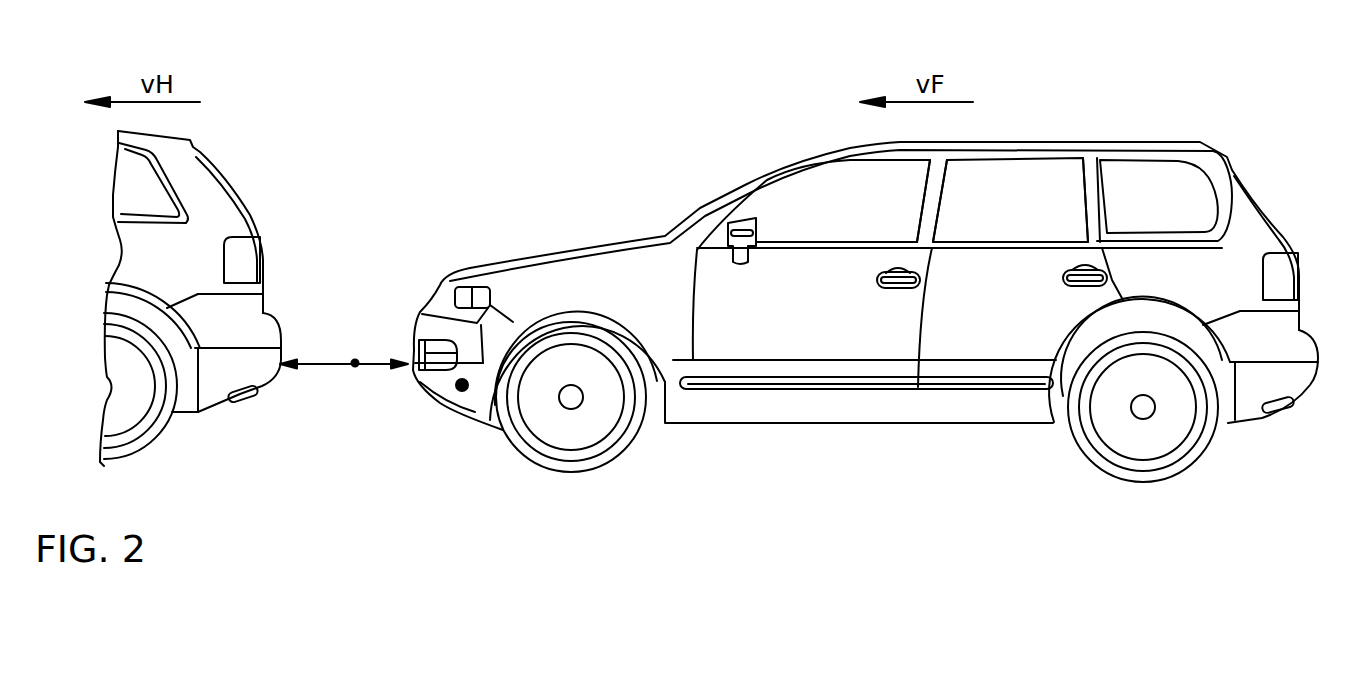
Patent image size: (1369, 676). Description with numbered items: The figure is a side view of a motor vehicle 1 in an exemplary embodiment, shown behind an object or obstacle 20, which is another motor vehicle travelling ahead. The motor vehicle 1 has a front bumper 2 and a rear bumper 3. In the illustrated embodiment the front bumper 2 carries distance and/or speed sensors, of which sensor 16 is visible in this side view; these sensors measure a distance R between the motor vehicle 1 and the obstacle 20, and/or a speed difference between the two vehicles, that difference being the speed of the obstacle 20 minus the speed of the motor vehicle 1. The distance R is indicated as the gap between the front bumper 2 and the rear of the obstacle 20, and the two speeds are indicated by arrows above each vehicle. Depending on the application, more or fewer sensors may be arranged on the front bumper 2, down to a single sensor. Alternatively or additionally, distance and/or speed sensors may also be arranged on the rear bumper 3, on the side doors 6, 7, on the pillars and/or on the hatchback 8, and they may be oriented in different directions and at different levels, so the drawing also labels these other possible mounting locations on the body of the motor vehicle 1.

The motor vehicle 1 is at (1215, 137).
The front bumper 2 is at (477, 395).
The rear bumper 3 is at (1298, 379).
The side door 6 is at (804, 345).
The side door 7 is at (965, 345).
The hatchback 8 is at (1242, 182).
The distance and/or speed sensor 16 is at (460, 390).
The object or obstacle 20 is at (220, 183).
The distance R is at (355, 363).